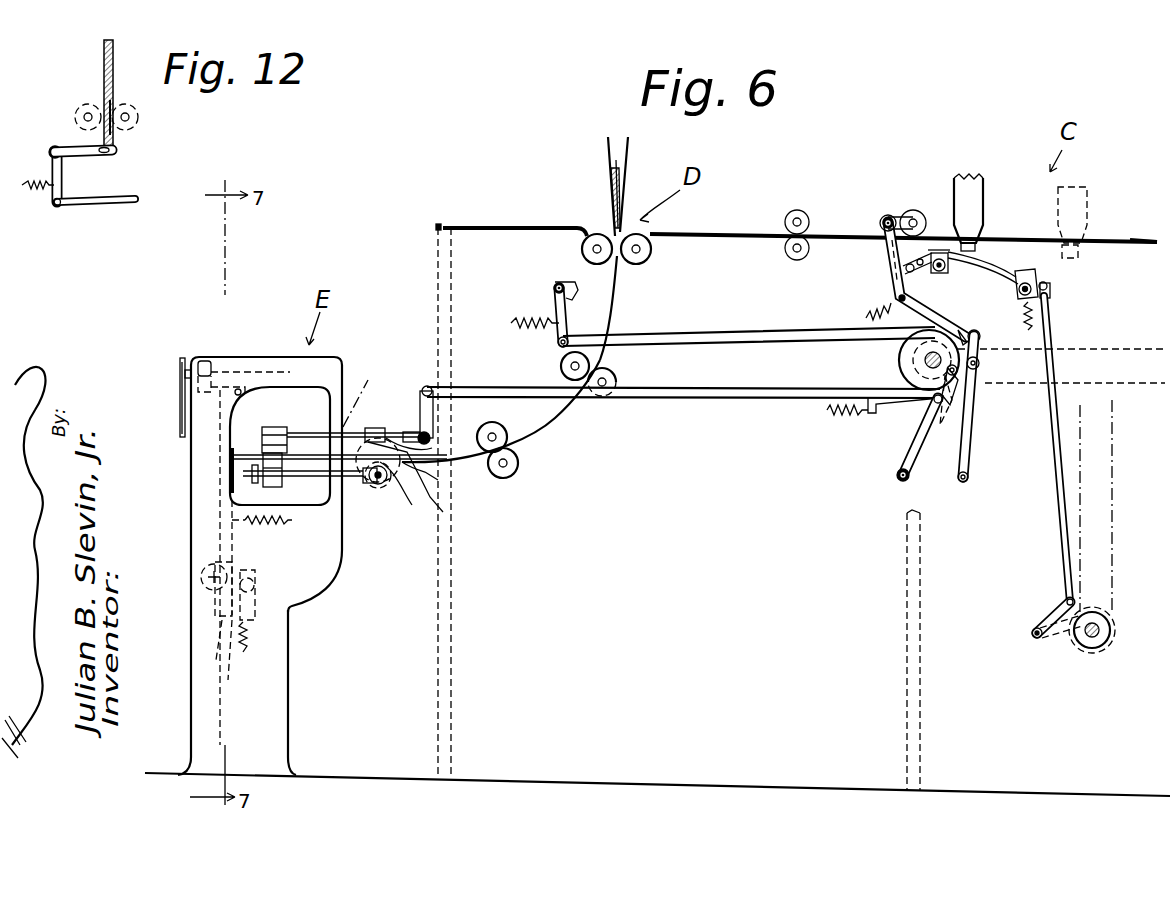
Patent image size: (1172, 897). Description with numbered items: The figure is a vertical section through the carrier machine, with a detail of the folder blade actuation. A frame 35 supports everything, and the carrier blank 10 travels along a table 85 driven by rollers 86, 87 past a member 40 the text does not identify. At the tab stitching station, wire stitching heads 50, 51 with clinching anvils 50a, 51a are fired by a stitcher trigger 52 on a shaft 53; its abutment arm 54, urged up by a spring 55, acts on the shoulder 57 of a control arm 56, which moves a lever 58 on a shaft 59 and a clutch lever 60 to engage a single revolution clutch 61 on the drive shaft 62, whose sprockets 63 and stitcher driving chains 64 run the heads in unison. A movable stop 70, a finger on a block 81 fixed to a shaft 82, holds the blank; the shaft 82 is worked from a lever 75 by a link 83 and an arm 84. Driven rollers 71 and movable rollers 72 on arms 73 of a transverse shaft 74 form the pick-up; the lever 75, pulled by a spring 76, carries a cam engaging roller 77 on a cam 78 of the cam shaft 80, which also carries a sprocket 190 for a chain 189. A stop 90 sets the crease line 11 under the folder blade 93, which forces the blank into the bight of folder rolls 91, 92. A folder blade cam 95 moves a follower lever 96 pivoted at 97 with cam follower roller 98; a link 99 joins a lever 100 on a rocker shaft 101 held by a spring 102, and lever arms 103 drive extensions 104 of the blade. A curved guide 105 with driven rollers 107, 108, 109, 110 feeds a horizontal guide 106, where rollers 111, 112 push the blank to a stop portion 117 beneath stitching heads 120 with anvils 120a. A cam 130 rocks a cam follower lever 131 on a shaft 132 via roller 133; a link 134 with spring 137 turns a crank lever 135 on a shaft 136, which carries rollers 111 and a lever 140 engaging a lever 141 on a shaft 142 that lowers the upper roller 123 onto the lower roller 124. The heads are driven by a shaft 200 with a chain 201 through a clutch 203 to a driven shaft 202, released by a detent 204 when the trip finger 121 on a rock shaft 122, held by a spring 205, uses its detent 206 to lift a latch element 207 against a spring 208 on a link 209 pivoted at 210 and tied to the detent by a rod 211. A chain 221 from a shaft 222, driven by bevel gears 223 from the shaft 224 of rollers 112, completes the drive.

In FIG. 6, the carrier blank 10 is at (318, 449).
In FIG. 6, the crease line 11 is at (620, 322).
In FIG. 6, the frame 35 is at (905, 628).
In FIG. 6, the guide bar 40 is at (1152, 224).
In FIG. 6, the wire stitching heads 50 is at (1088, 200).
In FIG. 6, the clinching anvils 50a is at (1080, 256).
In FIG. 6, the wire stitching heads 51 is at (982, 186).
In FIG. 6, the clinching anvils 51a is at (980, 248).
In FIG. 6, the stitcher trigger 52 is at (1024, 272).
In FIG. 6, the shaft 53 is at (1028, 298).
In FIG. 6, the operating abutment arm 54 is at (1050, 297).
In FIG. 6, the spring 55 is at (1048, 334).
In FIG. 6, the control arm 56 is at (1056, 488).
In FIG. 6, the shoulder 57 is at (1050, 285).
In FIG. 6, the lever 58 is at (1062, 598).
In FIG. 6, the shaft 59 is at (1030, 636).
In FIG. 6, the clutch lever 60 is at (1066, 636).
In FIG. 6, the single revolution clutch 61 is at (1114, 656).
In FIG. 6, the drive shaft 62 is at (1090, 640).
In FIG. 6, the sprockets 63 is at (1112, 626).
In FIG. 6, the stitcher driving chains 64 is at (1114, 510).
In FIG. 6, the movable stop 70 is at (893, 252).
In FIG. 6, the driven rollers 71 is at (905, 282).
In FIG. 6, the movable rollers 72 is at (912, 210).
In FIG. 6, the arms 73 is at (890, 214).
In FIG. 6, the transverse shaft 74 is at (880, 222).
In FIG. 6, the lever 75 is at (901, 302).
In FIG. 6, the spring 76 is at (866, 316).
In FIG. 6, the cam engaging roller 77 is at (975, 330).
In FIG. 6, the cam 78 is at (962, 334).
In FIG. 6, the cam shaft 80 is at (920, 362).
In FIG. 6, the block 81 is at (938, 274).
In FIG. 6, the shaft 82 is at (948, 268).
In FIG. 6, the link 83 is at (903, 270).
In FIG. 6, the arm 84 is at (985, 266).
In FIG. 6, the table 85 is at (520, 232).
In FIG. 6, the driven roller 86 is at (790, 259).
In FIG. 6, the driven roller 87 is at (788, 213).
In FIG. 6, the stop 90 is at (457, 228).
In FIG. 12, the folder roll 91 is at (140, 111).
In FIG. 6, the folder roll 91 is at (651, 258).
In FIG. 12, the folder roll 92 is at (83, 104).
In FIG. 6, the folder roll 92 is at (582, 251).
In FIG. 12, the folder blade 93 is at (104, 52).
In FIG. 6, the folder blade 93 is at (612, 185).
In FIG. 6, the folder blade cam 95 is at (960, 372).
In FIG. 6, the follower lever 96 is at (972, 426).
In FIG. 6, the pivot 97 is at (970, 478).
In FIG. 6, the cam follower roller 98 is at (980, 366).
In FIG. 12, the link 99 is at (95, 204).
In FIG. 6, the link 99 is at (764, 340).
In FIG. 6, the lever 100 is at (568, 292).
In FIG. 12, the rocker shaft 101 is at (52, 147).
In FIG. 6, the rocker shaft 101 is at (552, 290).
In FIG. 12, the spring 102 is at (30, 190).
In FIG. 6, the spring 102 is at (530, 330).
In FIG. 12, the lever arms 103 is at (85, 156).
In FIG. 6, the lever arms 103 is at (556, 283).
In FIG. 12, the extensions 104 is at (115, 100).
In FIG. 6, the curved guide 105 is at (560, 420).
In FIG. 6, the horizontal guide 106 is at (428, 490).
In FIG. 6, the driven roller 107 is at (561, 368).
In FIG. 6, the driven roller 108 is at (618, 378).
In FIG. 6, the driven roller 109 is at (494, 422).
In FIG. 6, the driven roller 110 is at (519, 470).
In FIG. 6, the rollers 111 is at (360, 440).
In FIG. 6, the rollers 112 is at (376, 484).
In FIG. 6, the stop portion 117 is at (233, 457).
In FIG. 6, the wire stitching heads 120 is at (328, 410).
In FIG. 6, the clinching anvils 120a is at (348, 538).
In FIG. 6, the trip finger 121 is at (243, 474).
In FIG. 6, the rock shaft 122 is at (201, 578).
In FIG. 6, the upper roller 123 is at (262, 436).
In FIG. 6, the lower positively actuated roller 124 is at (292, 520).
In FIG. 6, the cam 130 is at (900, 355).
In FIG. 6, the cam follower lever 131 is at (912, 447).
In FIG. 6, the shaft 132 is at (896, 477).
In FIG. 6, the cam follower roller 133 is at (950, 410).
In FIG. 6, the link 134 is at (720, 398).
In FIG. 6, the crank lever 135 is at (434, 400).
In FIG. 6, the shaft 136 is at (436, 433).
In FIG. 6, the spring 137 is at (834, 416).
In FIG. 6, the lever 140 is at (420, 460).
In FIG. 6, the lever 141 is at (434, 470).
In FIG. 6, the shaft 142 is at (375, 388).
In FIG. 6, the chain 189 is at (1142, 354).
In FIG. 6, the sprocket 190 is at (913, 377).
In FIG. 6, the shaft 200 is at (191, 370).
In FIG. 6, the chain 201 is at (180, 382).
In FIG. 6, the driven shaft 202 is at (262, 372).
In FIG. 6, the clutch 203 is at (212, 360).
In FIG. 6, the detent element 204 is at (181, 400).
In FIG. 6, the spring 205 is at (272, 530).
In FIG. 6, the detent 206 is at (258, 592).
In FIG. 6, the latch element 207 is at (256, 572).
In FIG. 6, the spring 208 is at (256, 662).
In FIG. 6, the link 209 is at (218, 642).
In FIG. 6, the pivot 210 is at (228, 676).
In FIG. 6, the rod 211 is at (215, 540).
In FIG. 6, the chain 221 is at (256, 484).
In FIG. 6, the shaft 222 is at (282, 480).
In FIG. 6, the bevel gears 223 is at (374, 485).
In FIG. 6, the shaft 224 is at (395, 520).